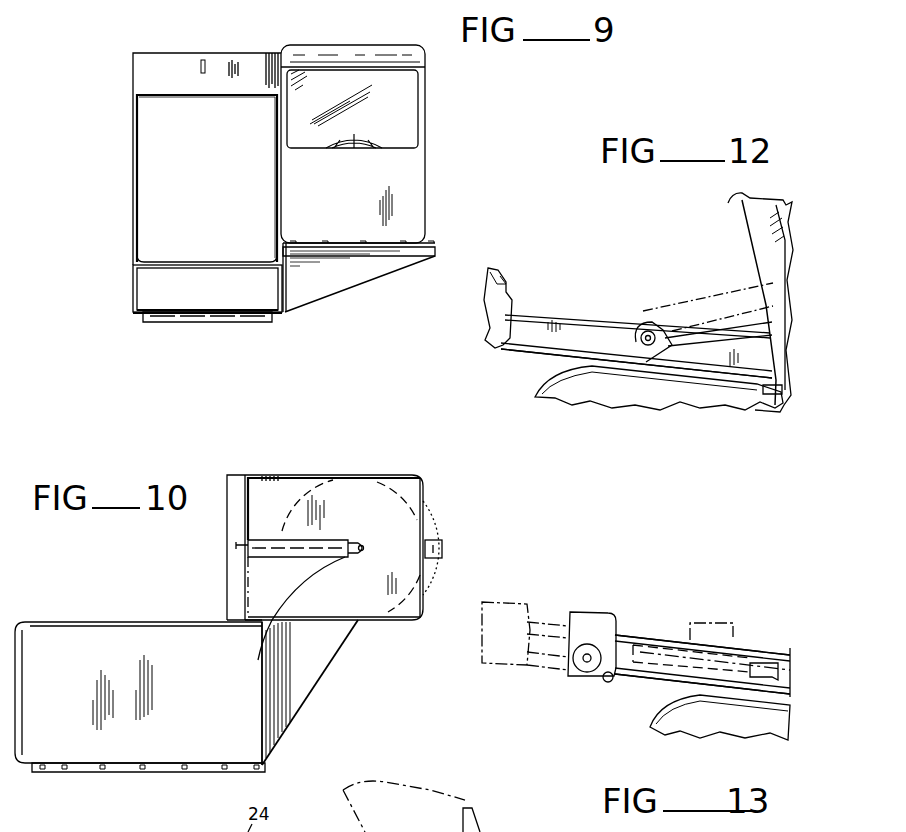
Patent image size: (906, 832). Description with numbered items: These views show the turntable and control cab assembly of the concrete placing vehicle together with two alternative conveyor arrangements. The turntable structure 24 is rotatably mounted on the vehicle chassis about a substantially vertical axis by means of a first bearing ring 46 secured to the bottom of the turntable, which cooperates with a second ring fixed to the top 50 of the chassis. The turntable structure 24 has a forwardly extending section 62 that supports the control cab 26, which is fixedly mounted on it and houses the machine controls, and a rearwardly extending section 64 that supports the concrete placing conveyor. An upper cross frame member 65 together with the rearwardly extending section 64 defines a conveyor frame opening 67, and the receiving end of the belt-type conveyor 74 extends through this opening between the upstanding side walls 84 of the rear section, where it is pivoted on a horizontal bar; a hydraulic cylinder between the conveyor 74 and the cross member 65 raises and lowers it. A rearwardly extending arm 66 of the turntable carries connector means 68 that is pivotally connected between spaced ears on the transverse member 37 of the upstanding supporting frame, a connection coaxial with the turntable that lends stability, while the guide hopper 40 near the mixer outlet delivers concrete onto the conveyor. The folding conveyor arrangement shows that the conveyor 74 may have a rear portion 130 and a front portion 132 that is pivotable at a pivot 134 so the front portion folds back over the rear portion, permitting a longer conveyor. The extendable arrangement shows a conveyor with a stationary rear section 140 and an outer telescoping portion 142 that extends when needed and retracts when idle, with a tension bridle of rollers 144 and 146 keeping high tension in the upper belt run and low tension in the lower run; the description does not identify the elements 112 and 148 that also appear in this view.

In FIG. 9, the turntable structure 24 is at (270, 40).
In FIG. 10, the turntable structure 24 is at (447, 510).
In FIG. 9, the control cab 26 is at (412, 163).
In FIG. 12, the control cab 26 is at (728, 196).
In FIG. 10, the control cab 26 is at (82, 635).
In FIG. 10, the transverse member 37 is at (489, 820).
In FIG. 10, the guide hopper 40 is at (395, 780).
In FIG. 9, the first bearing ring 46 is at (203, 322).
In FIG. 12, the chassis top 50 is at (692, 406).
In FIG. 13, the chassis top 50 is at (770, 726).
In FIG. 9, the forwardly extending section 62 is at (433, 250).
In FIG. 10, the forwardly extending section 62 is at (125, 772).
In FIG. 9, the rearwardly extending section 64 is at (150, 292).
In FIG. 10, the rearwardly extending section 64 is at (228, 475).
In FIG. 9, the upper cross frame member 65 is at (145, 73).
In FIG. 10, the upper cross frame member 65 is at (242, 478).
In FIG. 10, the rearwardly extending arm 66 is at (258, 580).
In FIG. 9, the conveyor frame opening 67 is at (182, 210).
In FIG. 10, the connector means 68 is at (360, 545).
In FIG. 12, the belt-type conveyor 74 is at (605, 312).
In FIG. 13, the belt-type conveyor 74 is at (759, 640).
In FIG. 9, the upstanding side walls 84 is at (137, 136).
In FIG. 10, the upstanding side walls 84 is at (312, 615).
In FIG. 12, the mounting block 112 is at (508, 302).
In FIG. 13, the mounting block 112 is at (592, 617).
In FIG. 12, the rear portion 130 is at (733, 382).
In FIG. 12, the front portion 132 is at (545, 350).
In FIG. 12, the pivot 134 is at (646, 336).
In FIG. 13, the stationary rear section 140 is at (778, 652).
In FIG. 13, the telescoping portion 142 is at (632, 640).
In FIG. 13, the roller 144 is at (578, 668).
In FIG. 13, the roller 146 is at (609, 683).
In FIG. 13, the latch 148 is at (750, 660).